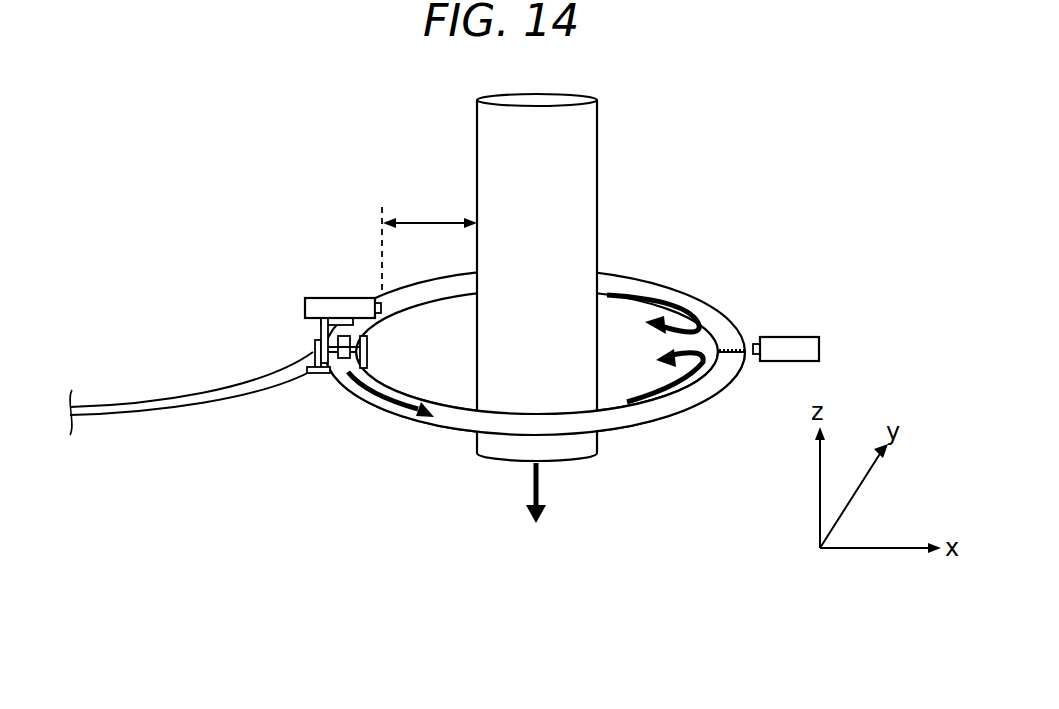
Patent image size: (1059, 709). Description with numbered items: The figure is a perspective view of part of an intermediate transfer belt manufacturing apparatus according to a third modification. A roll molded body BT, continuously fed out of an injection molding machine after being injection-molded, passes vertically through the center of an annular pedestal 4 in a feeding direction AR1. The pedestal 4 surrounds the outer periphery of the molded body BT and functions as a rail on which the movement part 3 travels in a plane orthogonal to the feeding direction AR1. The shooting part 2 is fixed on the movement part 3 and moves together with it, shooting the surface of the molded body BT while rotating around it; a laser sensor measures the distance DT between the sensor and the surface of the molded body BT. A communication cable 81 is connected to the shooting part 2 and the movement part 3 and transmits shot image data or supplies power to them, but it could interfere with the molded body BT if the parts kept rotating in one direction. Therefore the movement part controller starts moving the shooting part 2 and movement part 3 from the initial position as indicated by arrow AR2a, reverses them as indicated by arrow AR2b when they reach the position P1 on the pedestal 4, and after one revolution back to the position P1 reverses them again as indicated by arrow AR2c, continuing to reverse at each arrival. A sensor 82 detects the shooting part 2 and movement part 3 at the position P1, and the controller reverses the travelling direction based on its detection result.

The shooting part 2 is at (340, 302).
The movement part 3 is at (313, 351).
The pedestal 4 is at (460, 422).
The communication cable 81 is at (184, 400).
The sensor 82 is at (790, 337).
The molded body BT is at (500, 128).
The distance DT is at (432, 218).
The position P1 is at (722, 345).
The feeding direction AR1 is at (542, 488).
The arrow AR2a is at (394, 398).
The arrow AR2b is at (670, 388).
The arrow AR2c is at (654, 306).